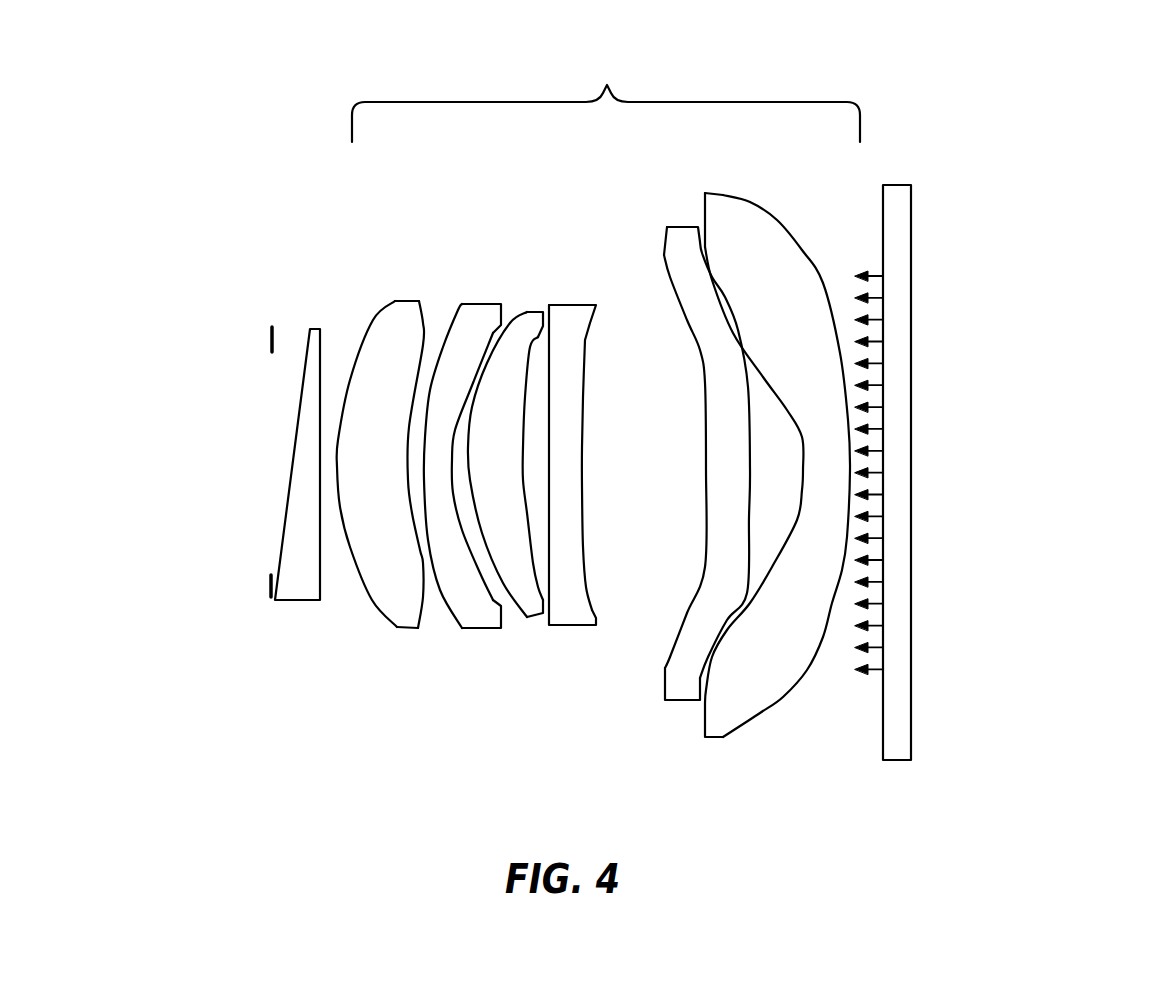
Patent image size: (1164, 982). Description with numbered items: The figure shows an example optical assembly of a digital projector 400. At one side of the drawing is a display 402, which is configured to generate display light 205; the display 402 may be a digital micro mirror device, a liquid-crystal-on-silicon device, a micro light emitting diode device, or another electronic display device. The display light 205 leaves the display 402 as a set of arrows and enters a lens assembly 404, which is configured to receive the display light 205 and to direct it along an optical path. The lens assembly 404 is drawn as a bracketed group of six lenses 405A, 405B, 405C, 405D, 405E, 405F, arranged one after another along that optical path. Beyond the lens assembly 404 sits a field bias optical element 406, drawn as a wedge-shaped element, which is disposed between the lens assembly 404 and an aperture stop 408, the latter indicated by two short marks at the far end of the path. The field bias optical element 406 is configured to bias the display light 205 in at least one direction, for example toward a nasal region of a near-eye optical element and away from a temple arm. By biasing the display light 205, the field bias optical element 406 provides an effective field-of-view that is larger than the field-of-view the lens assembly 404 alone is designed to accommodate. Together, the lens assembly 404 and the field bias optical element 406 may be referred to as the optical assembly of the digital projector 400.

The digital projector 400 is at (1066, 131).
The display 402 is at (903, 258).
The lens assembly 404 is at (612, 83).
The lens 405A is at (403, 303).
The lens 405B is at (472, 312).
The lens 405C is at (530, 325).
The lens 405D is at (563, 318).
The lens 405E is at (677, 237).
The lens 405F is at (757, 220).
The field bias optical element 406 is at (301, 593).
The aperture stop 408 is at (270, 350).
The display light 205 is at (882, 670).